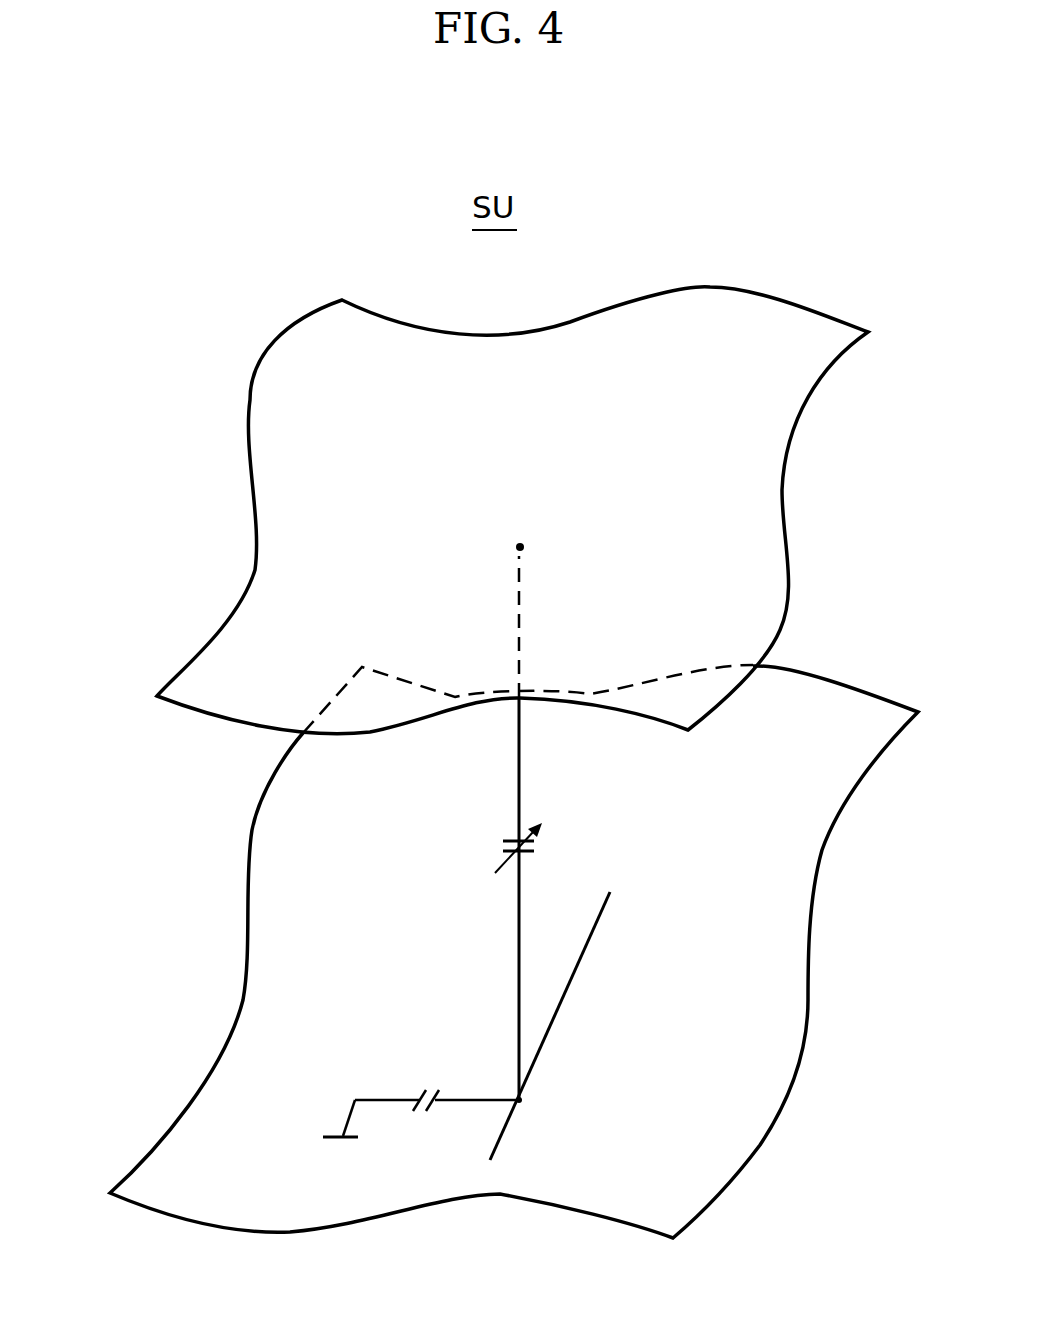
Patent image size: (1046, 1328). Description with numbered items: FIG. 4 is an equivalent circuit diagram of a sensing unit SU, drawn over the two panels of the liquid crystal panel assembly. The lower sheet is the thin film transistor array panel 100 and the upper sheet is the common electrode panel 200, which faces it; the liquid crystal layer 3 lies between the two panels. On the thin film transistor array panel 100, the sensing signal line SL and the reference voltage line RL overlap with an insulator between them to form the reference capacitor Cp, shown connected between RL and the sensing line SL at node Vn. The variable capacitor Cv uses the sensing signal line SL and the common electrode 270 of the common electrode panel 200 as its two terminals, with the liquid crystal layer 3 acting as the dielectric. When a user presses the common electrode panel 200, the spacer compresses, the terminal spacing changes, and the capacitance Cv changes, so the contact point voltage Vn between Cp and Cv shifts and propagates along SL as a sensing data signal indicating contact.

The liquid crystal layer 3 is at (138, 826).
The thin film transistor array panel 100 is at (826, 926).
The common electrode panel 200 is at (806, 548).
The common electrode 270 is at (783, 478).